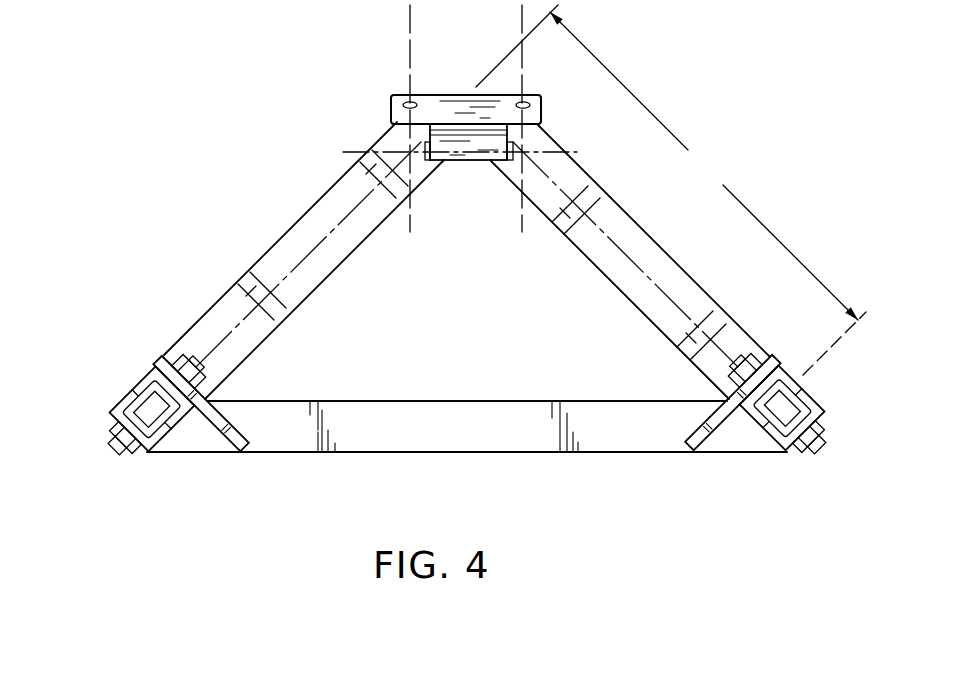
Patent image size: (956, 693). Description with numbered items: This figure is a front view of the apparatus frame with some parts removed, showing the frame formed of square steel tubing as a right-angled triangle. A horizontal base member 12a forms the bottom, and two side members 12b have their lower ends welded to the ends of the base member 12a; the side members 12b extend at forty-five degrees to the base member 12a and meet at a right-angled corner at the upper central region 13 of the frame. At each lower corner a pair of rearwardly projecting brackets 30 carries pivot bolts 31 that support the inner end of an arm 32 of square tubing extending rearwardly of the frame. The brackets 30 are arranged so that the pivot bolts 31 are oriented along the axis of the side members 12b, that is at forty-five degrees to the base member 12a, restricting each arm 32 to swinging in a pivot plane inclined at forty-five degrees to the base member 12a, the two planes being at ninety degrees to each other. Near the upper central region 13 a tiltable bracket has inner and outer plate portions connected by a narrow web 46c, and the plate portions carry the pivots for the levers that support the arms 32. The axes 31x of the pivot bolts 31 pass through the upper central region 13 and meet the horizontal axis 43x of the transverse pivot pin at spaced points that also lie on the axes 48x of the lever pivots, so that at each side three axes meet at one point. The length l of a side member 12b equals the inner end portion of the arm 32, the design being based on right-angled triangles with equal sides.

The upper central region 13 is at (392, 84).
The narrow web 46c is at (474, 142).
The axes of the pivots 48 48x is at (522, 32).
The horizontal axis of pivot 43 43x is at (565, 152).
The axes of the pivots 31 31x is at (553, 177).
The length of the side l is at (671, 190).
The side members 12b is at (305, 218).
The horizontal base member 12a is at (467, 443).
The rearwardly projecting brackets 30 is at (173, 358).
The pivot bolts 31 is at (175, 428).
The arm 32 is at (143, 383).